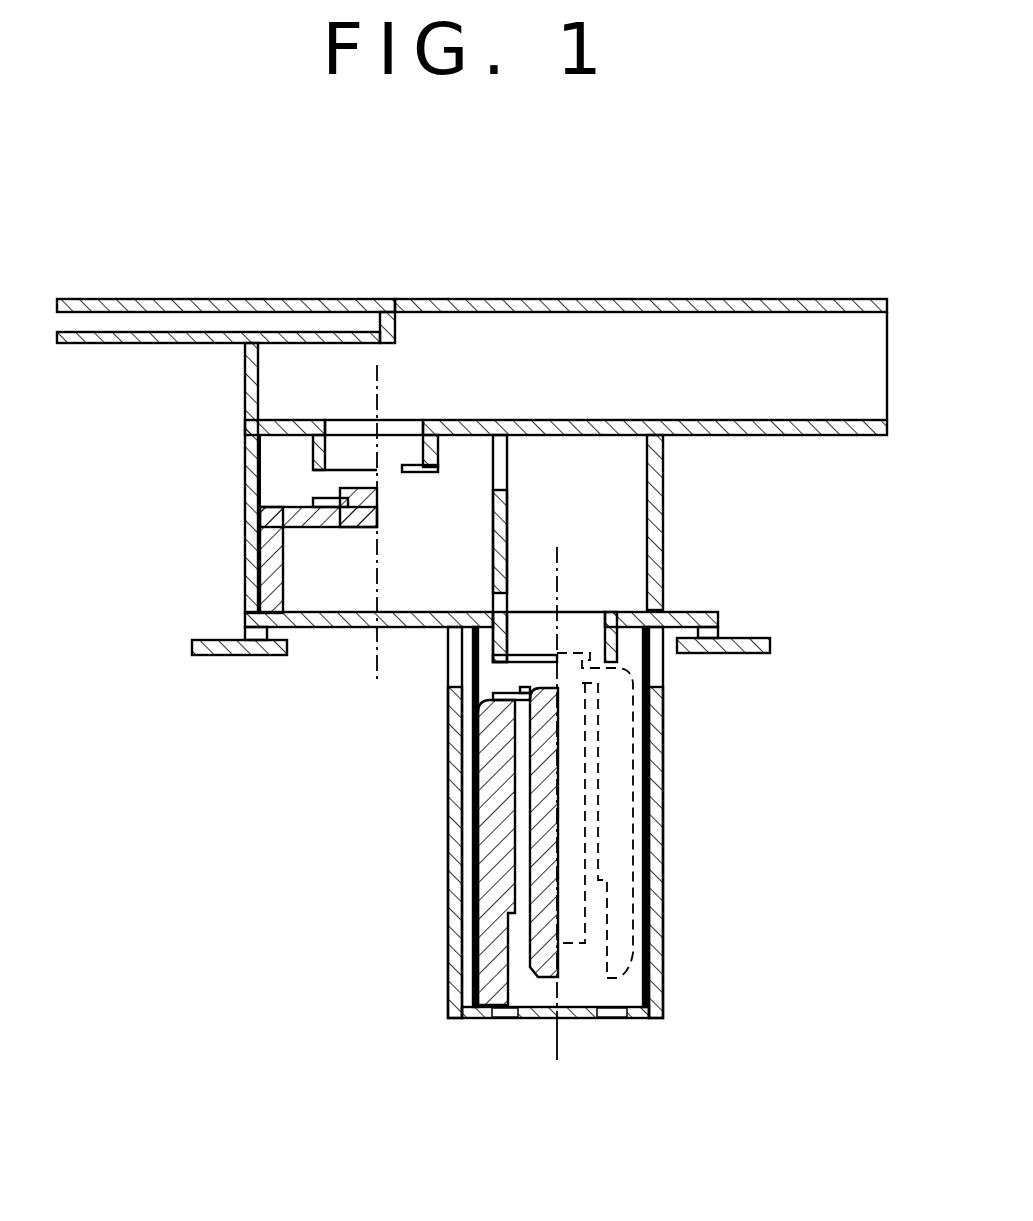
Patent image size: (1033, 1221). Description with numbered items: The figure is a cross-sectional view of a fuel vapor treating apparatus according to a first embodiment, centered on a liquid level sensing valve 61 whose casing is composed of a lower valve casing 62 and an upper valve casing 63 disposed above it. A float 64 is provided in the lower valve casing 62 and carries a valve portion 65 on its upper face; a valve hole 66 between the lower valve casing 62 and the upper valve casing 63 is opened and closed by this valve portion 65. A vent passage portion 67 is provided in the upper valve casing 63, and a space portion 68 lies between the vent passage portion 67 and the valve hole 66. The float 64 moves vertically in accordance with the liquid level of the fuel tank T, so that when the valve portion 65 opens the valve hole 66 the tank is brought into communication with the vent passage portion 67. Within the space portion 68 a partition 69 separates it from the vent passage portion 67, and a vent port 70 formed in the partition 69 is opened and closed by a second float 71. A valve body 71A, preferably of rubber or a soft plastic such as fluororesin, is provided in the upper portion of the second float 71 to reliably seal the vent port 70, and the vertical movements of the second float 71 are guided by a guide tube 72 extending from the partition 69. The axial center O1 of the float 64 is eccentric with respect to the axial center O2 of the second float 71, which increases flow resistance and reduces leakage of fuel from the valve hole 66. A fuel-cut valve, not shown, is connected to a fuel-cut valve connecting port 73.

The liquid level sensing valve 61 is at (692, 603).
The lower valve casing 62 is at (456, 793).
The upper valve casing 63 is at (245, 383).
The float 64 is at (500, 878).
The valve portion 65 is at (492, 717).
The valve hole 66 is at (463, 642).
The vent passage portion 67 is at (752, 306).
The space portion 68 is at (575, 470).
The partition 69 is at (468, 436).
The vent port 70 is at (401, 437).
The second float 71 is at (272, 565).
The valve body 71A is at (335, 490).
The guide tube 72 is at (500, 512).
The fuel-cut valve connecting port 73 is at (146, 306).
The axial center of the float O1 is at (557, 550).
The axial center of the second float O2 is at (375, 382).
The fuel tank T is at (230, 657).